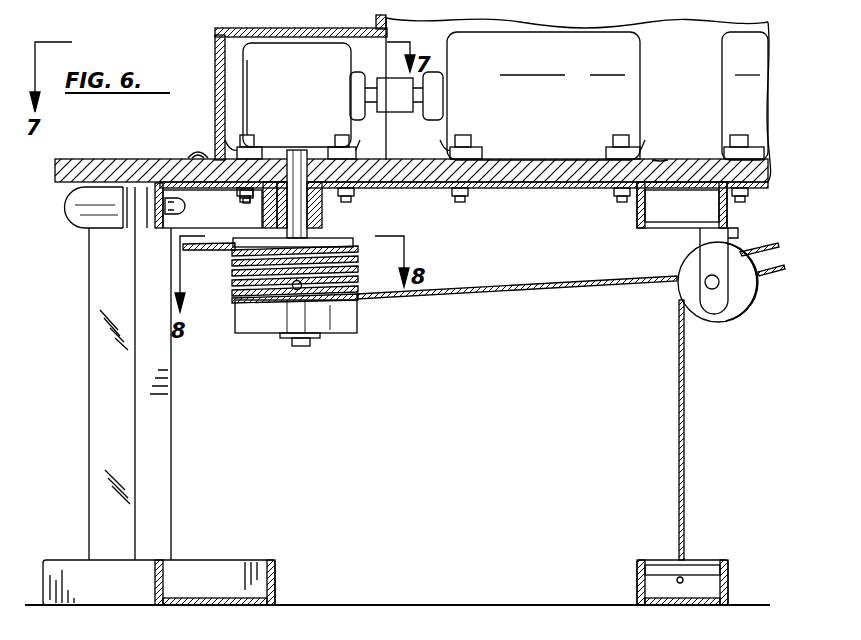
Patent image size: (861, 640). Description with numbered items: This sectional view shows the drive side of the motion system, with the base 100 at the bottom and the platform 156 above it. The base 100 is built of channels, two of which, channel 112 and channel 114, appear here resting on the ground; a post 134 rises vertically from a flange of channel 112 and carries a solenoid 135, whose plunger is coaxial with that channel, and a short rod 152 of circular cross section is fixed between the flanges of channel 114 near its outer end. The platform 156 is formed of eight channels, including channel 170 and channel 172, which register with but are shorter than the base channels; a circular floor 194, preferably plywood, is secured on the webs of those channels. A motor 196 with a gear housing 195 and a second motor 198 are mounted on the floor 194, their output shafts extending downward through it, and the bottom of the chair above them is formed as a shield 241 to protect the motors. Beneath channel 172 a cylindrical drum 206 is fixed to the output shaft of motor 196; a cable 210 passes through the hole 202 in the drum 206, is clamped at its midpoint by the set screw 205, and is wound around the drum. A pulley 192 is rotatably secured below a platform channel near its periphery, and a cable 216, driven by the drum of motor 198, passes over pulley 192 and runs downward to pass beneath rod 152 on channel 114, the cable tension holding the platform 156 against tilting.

The base 100 is at (215, 552).
The channel 112 is at (275, 583).
The channel 114 is at (728, 583).
The post 134 is at (90, 408).
The solenoid 135 is at (72, 212).
The rod 152 is at (655, 565).
The platform 156 is at (520, 190).
The channel 170 is at (725, 215).
The channel 172 is at (185, 158).
The pulley 192 is at (735, 320).
The circular floor 194 is at (665, 165).
The gear housing 195 is at (303, 100).
The motor 196 is at (636, 72).
The motor 198 is at (726, 92).
The hole 202 is at (262, 300).
The set screw 205 is at (300, 290).
The cylindrical drum 206 is at (335, 330).
The cable 210 is at (214, 255).
The cable 216 is at (684, 428).
The shield 241 is at (216, 38).